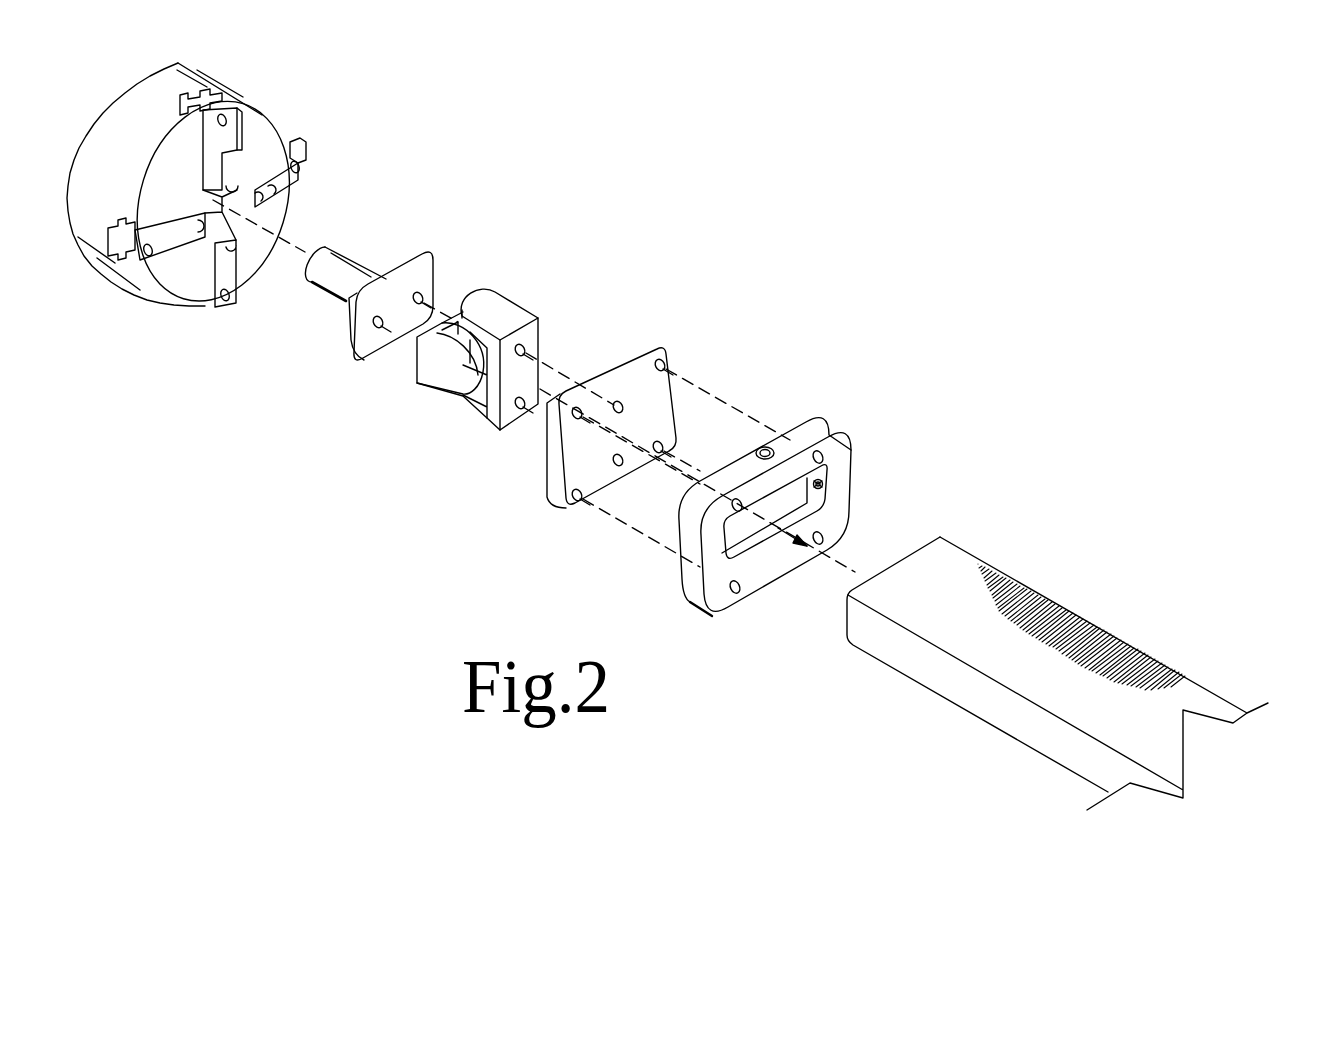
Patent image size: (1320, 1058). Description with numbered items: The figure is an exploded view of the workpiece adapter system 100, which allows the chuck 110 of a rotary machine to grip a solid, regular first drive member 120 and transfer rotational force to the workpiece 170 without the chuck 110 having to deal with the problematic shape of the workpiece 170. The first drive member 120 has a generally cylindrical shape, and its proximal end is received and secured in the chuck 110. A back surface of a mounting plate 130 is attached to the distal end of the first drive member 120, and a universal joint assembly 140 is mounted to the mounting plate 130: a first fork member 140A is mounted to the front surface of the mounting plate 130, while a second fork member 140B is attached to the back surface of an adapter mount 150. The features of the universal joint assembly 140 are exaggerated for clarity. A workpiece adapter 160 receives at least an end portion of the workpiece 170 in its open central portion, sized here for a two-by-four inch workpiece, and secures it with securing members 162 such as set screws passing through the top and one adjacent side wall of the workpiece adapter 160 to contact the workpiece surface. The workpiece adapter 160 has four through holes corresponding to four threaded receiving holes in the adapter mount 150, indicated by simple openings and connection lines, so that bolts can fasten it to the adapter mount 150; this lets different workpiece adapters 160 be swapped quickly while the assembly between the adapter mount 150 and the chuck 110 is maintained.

The workpiece adapter system 100 is at (773, 168).
The chuck 110 is at (242, 97).
The first drive member 120 is at (333, 270).
The mounting plate 130 is at (423, 276).
The universal joint assembly 140 is at (452, 428).
The first fork member 140A is at (437, 370).
The second fork member 140B is at (508, 318).
The adapter mount 150 is at (635, 357).
The workpiece adapter 160 is at (832, 448).
The securing members 162 is at (765, 448).
The workpiece 170 is at (952, 580).